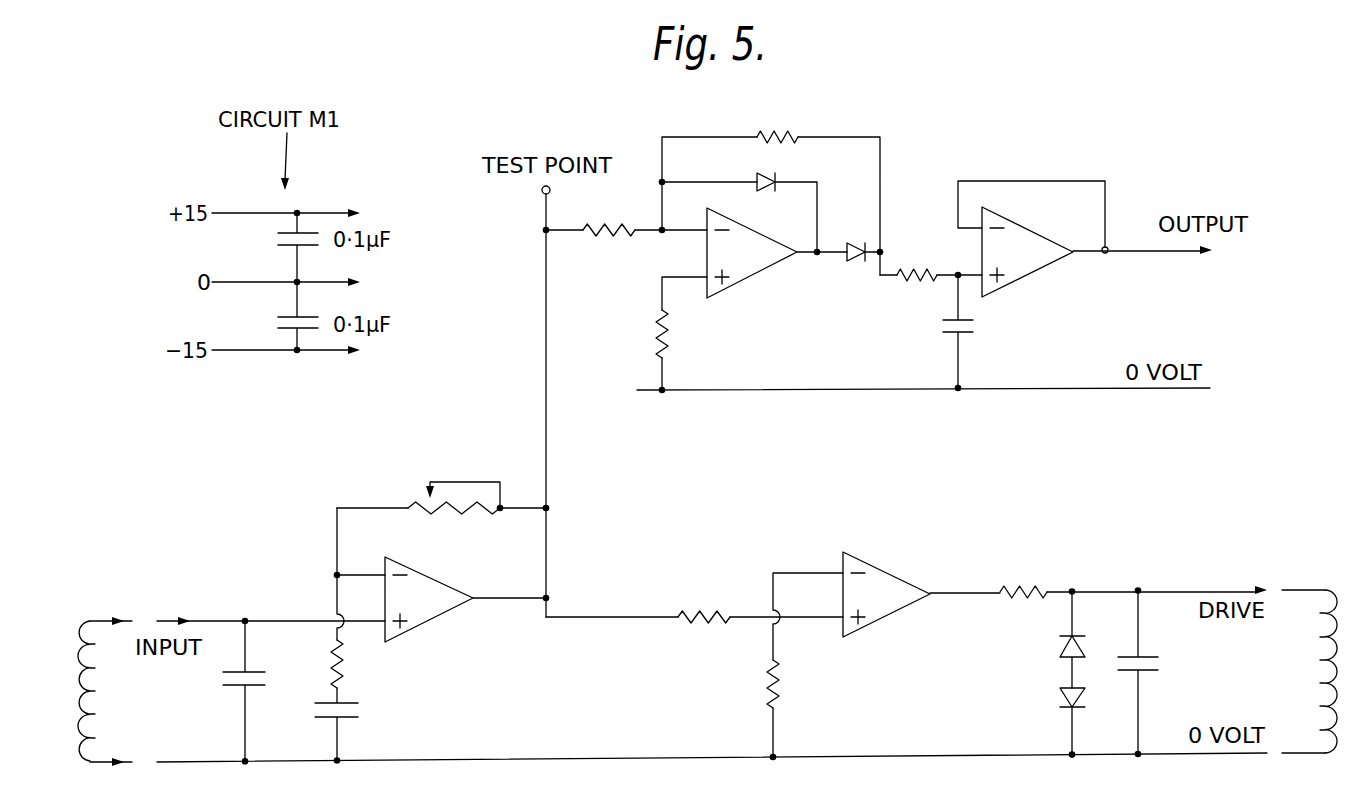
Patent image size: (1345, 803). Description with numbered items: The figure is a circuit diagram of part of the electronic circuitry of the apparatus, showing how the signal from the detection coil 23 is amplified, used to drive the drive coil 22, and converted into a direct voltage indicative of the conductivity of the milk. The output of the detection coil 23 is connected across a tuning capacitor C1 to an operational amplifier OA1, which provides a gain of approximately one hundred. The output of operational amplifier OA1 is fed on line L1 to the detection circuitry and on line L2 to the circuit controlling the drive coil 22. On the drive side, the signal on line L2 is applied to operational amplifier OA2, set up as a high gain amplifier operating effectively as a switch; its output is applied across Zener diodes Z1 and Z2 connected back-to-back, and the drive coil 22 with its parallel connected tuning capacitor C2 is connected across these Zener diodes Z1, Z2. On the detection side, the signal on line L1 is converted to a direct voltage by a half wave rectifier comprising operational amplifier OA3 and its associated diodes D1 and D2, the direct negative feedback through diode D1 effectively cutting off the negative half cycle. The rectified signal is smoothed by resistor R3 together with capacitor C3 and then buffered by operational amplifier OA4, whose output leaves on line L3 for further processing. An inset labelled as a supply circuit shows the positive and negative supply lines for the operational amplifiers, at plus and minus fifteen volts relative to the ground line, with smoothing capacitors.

The drive coil 22 is at (1329, 594).
The detection coil 23 is at (92, 619).
The line L1 is at (546, 350).
The line L2 is at (605, 618).
The line L3 is at (1142, 266).
The operational amplifier OA1 is at (429, 605).
The operational amplifier OA2 is at (886, 602).
The operational amplifier OA3 is at (752, 259).
The operational amplifier OA4 is at (1027, 257).
The tuning capacitor C1 is at (256, 691).
The tuning capacitor C2 is at (1151, 672).
The capacitor C3 is at (970, 331).
The diode D1 is at (771, 195).
The diode D2 is at (857, 237).
The resistor R3 is at (917, 288).
The Zener diode Z1 is at (1056, 639).
The Zener diode Z2 is at (1056, 721).